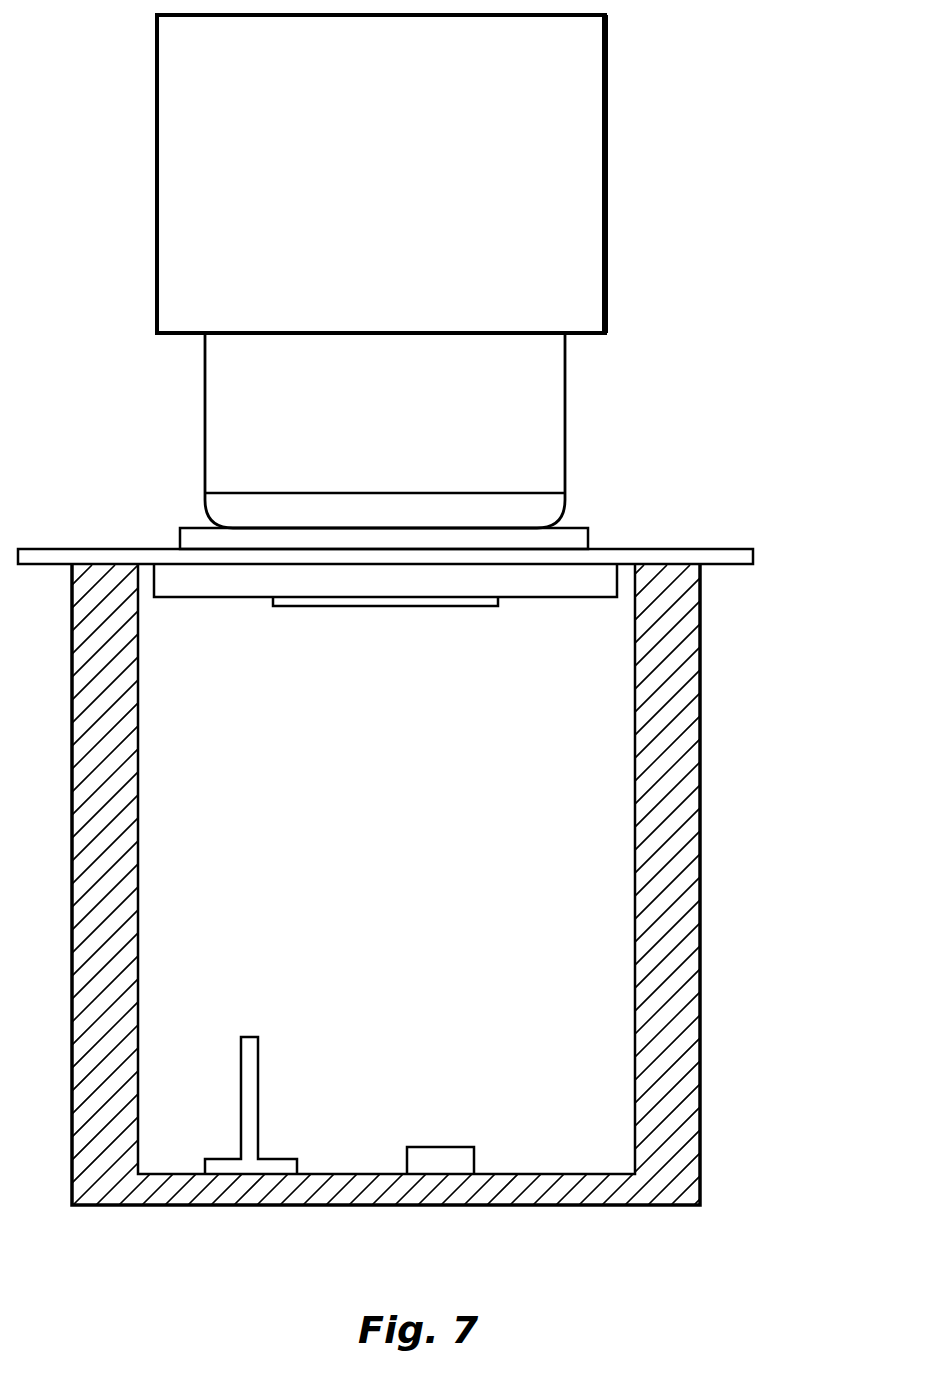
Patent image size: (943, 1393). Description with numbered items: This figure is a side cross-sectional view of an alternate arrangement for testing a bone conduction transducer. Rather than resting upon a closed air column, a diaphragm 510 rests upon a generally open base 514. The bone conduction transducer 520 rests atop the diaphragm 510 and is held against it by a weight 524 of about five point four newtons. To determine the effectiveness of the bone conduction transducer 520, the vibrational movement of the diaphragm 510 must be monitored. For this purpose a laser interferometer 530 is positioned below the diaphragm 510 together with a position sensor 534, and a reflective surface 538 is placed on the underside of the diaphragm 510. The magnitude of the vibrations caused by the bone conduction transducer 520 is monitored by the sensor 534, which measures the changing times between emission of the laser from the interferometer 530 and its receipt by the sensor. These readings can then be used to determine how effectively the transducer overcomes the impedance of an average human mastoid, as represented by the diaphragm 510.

The diaphragm 510 is at (732, 550).
The base 514 is at (700, 763).
The bone conduction transducer 520 is at (538, 410).
The weight 524 is at (587, 202).
The laser interferometer 530 is at (263, 1165).
The position sensor 534 is at (440, 1160).
The reflective surface 538 is at (418, 606).